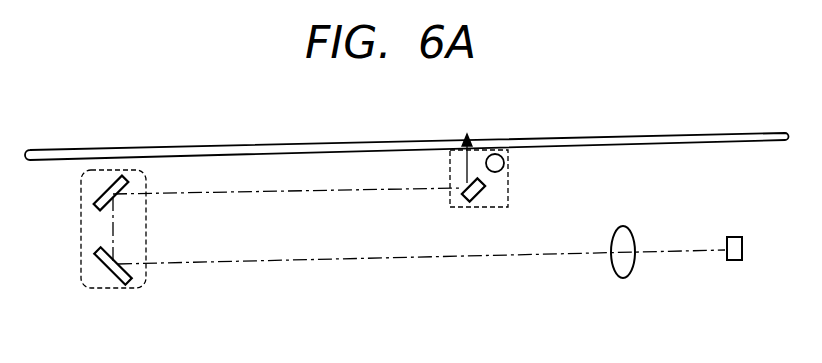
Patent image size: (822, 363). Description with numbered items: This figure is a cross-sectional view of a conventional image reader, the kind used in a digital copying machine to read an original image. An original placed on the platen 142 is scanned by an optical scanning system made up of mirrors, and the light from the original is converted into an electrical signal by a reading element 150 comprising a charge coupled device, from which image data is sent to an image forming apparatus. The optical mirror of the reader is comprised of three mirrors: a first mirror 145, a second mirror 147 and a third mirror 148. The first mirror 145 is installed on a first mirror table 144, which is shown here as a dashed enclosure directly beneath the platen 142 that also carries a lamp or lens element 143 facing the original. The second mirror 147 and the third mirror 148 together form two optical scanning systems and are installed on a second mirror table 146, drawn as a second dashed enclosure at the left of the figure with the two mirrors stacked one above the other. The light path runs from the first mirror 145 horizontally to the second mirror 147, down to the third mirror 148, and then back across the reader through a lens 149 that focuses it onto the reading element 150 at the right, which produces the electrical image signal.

The optical disk / recording medium 142 is at (617, 137).
The objective lens 143 is at (503, 160).
The first mirror table 144 is at (505, 182).
The first mirror 145 is at (479, 196).
The second mirror table 146 is at (140, 230).
The second mirror 147 is at (123, 176).
The third mirror 148 is at (107, 277).
The condensing lens 149 is at (618, 267).
The reading element 150 is at (734, 260).